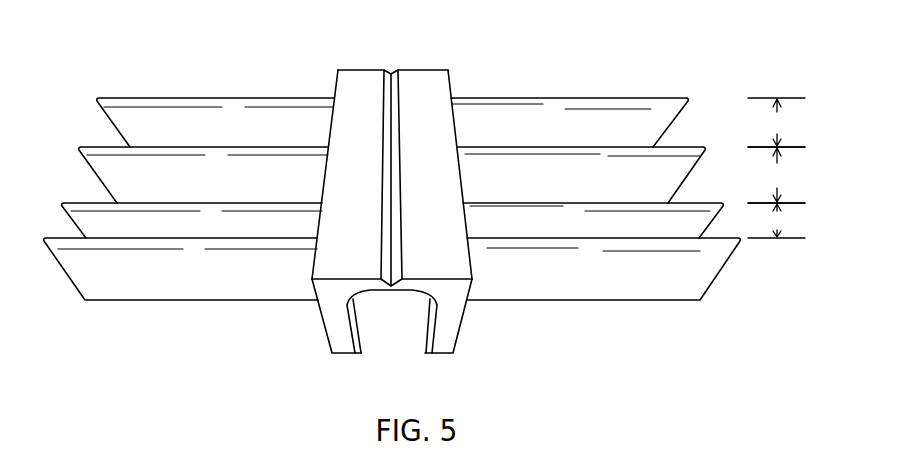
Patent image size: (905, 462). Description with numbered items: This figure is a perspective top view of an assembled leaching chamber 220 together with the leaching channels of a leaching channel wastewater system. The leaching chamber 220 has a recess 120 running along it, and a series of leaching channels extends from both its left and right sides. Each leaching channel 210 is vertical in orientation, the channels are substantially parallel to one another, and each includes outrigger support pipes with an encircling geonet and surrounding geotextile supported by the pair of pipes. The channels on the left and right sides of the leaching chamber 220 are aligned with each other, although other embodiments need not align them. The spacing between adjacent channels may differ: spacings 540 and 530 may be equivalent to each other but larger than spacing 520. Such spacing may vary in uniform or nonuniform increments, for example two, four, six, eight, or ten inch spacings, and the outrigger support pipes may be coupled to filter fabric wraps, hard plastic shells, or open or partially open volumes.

The recess 120 is at (393, 69).
The leaching channel 210 is at (190, 287).
The leaching chamber 220 is at (442, 338).
The spacing 520 is at (776, 220).
The spacing 530 is at (776, 175).
The spacing 540 is at (776, 122).